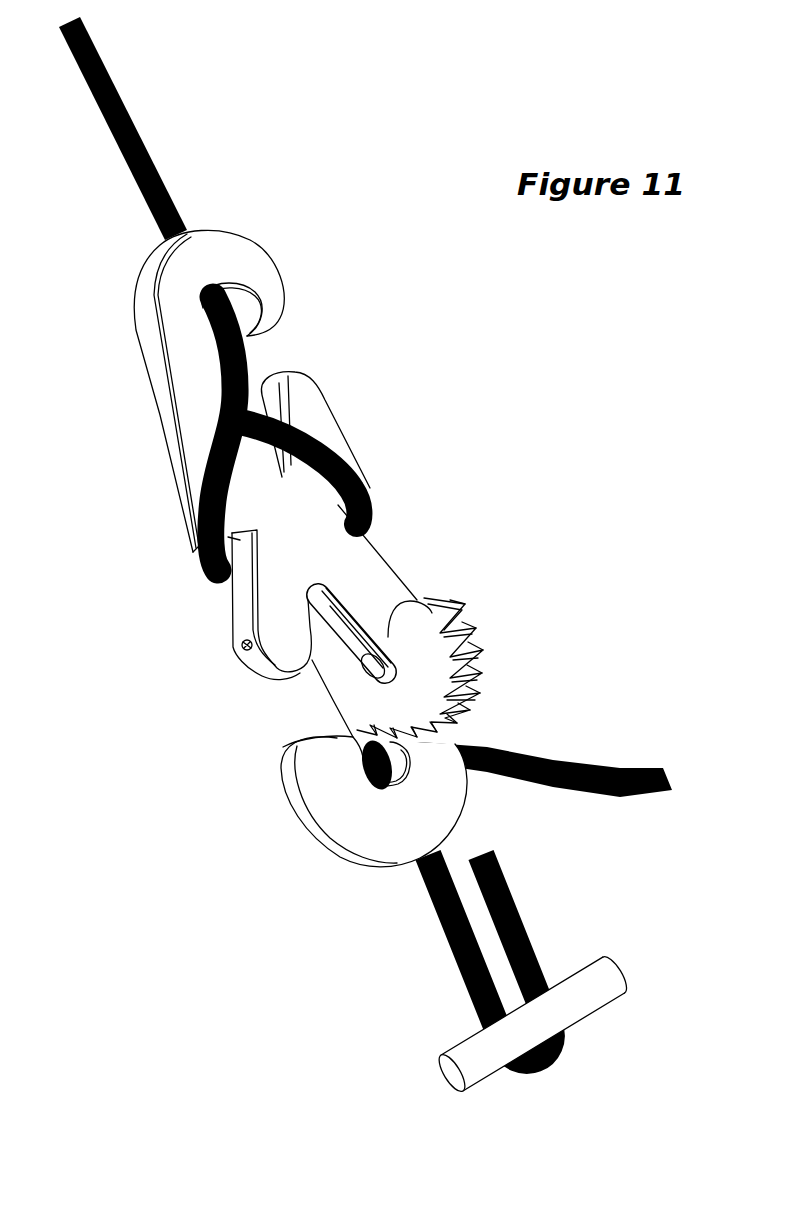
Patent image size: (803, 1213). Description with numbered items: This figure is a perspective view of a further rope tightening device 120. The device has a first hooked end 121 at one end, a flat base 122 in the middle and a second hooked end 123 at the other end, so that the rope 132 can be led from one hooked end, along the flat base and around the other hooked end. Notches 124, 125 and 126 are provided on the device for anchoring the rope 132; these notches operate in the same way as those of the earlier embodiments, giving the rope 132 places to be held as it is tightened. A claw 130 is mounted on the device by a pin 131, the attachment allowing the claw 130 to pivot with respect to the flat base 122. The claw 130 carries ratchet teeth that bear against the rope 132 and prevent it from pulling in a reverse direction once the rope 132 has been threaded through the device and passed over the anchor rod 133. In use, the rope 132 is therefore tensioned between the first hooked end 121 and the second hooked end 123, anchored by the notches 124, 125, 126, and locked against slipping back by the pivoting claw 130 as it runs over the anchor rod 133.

The rope tightening device 120 is at (333, 567).
The first hooked end 121 is at (200, 258).
The flat base 122 is at (373, 568).
The second hooked end 123 is at (332, 773).
The notch 124 is at (205, 545).
The notch 125 is at (280, 368).
The notch 126 is at (333, 617).
The claw 130 is at (462, 667).
The pin 131 is at (235, 643).
The rope 132 is at (128, 113).
The anchor rod 133 is at (453, 1071).